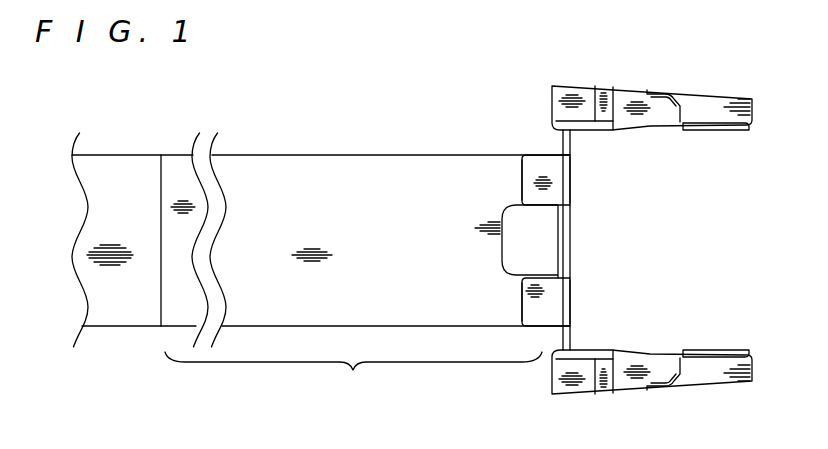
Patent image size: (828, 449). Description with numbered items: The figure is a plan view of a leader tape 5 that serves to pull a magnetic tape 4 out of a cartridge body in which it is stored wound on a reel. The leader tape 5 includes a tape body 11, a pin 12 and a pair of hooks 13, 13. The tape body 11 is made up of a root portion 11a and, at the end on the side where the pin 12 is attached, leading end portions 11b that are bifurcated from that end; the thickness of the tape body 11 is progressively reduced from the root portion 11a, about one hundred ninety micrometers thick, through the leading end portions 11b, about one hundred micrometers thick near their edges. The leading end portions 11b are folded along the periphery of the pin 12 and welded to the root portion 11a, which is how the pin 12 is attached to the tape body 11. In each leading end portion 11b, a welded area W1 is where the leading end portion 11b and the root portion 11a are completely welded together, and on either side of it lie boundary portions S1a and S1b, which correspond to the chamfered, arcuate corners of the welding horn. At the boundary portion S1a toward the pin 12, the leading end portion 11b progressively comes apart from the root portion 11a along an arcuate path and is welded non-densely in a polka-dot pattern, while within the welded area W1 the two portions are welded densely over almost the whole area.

The magnetic tape 4 is at (103, 160).
The leader tape 5 is at (360, 78).
The tape body 11 is at (352, 163).
The root portion 11a is at (353, 376).
The leading end portions 11b is at (542, 288).
The pin 12 is at (570, 340).
The hooks 13 is at (712, 103).
The boundary portion S1a is at (567, 173).
The boundary portion S1b is at (525, 169).
The welded area W1 is at (551, 169).